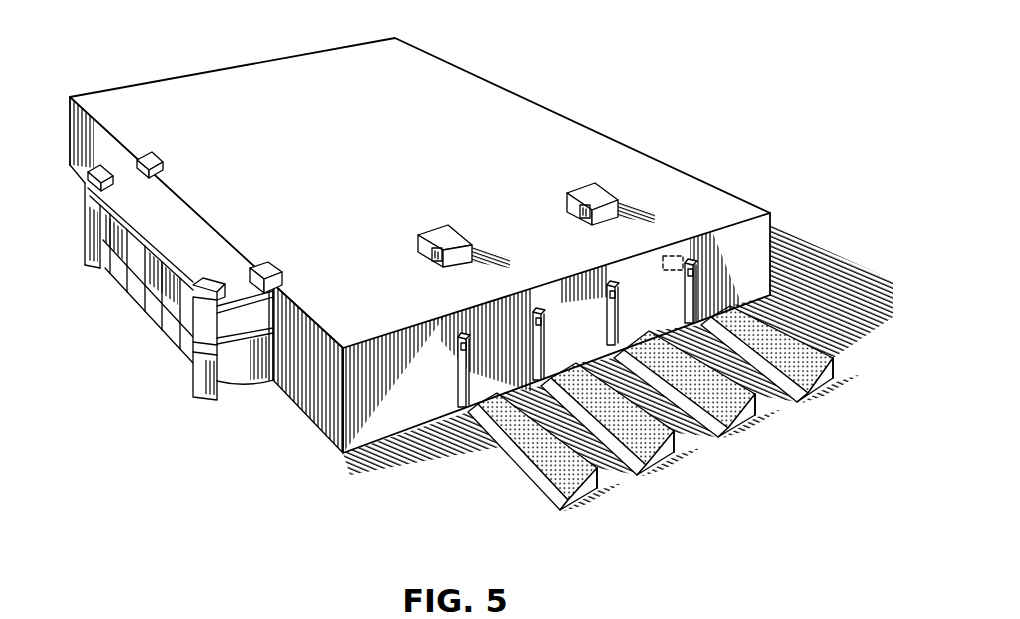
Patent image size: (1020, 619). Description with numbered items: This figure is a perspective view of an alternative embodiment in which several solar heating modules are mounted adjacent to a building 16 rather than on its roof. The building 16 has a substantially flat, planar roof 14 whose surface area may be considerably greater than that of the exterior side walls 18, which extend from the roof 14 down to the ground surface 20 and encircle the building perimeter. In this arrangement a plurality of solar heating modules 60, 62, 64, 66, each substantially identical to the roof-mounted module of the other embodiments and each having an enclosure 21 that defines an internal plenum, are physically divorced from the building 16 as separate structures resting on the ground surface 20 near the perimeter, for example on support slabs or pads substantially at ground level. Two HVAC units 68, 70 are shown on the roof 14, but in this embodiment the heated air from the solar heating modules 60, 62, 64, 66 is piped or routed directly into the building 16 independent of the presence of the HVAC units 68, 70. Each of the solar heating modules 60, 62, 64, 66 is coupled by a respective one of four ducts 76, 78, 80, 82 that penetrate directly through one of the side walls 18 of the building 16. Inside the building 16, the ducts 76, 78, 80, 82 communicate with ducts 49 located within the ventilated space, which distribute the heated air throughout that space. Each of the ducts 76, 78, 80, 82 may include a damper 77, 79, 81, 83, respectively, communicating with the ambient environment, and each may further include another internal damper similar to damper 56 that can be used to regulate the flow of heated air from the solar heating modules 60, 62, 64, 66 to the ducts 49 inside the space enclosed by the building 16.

The roof 14 is at (382, 172).
The building 16 is at (481, 267).
The exterior side walls 18 is at (742, 257).
The ground surface 20 is at (362, 498).
The enclosure 21 is at (602, 478).
The ducts 49 is at (669, 270).
The damper 56 is at (432, 255).
The solar heating module 60 is at (604, 514).
The solar heating module 62 is at (684, 479).
The solar heating module 64 is at (763, 442).
The solar heating module 66 is at (844, 405).
The HVAC unit 68 is at (440, 229).
The HVAC unit 70 is at (587, 188).
The duct 76 is at (458, 390).
The damper 77 is at (470, 342).
The duct 78 is at (533, 360).
The damper 79 is at (541, 314).
The duct 80 is at (607, 340).
The damper 81 is at (616, 292).
The duct 82 is at (685, 322).
The damper 83 is at (693, 262).